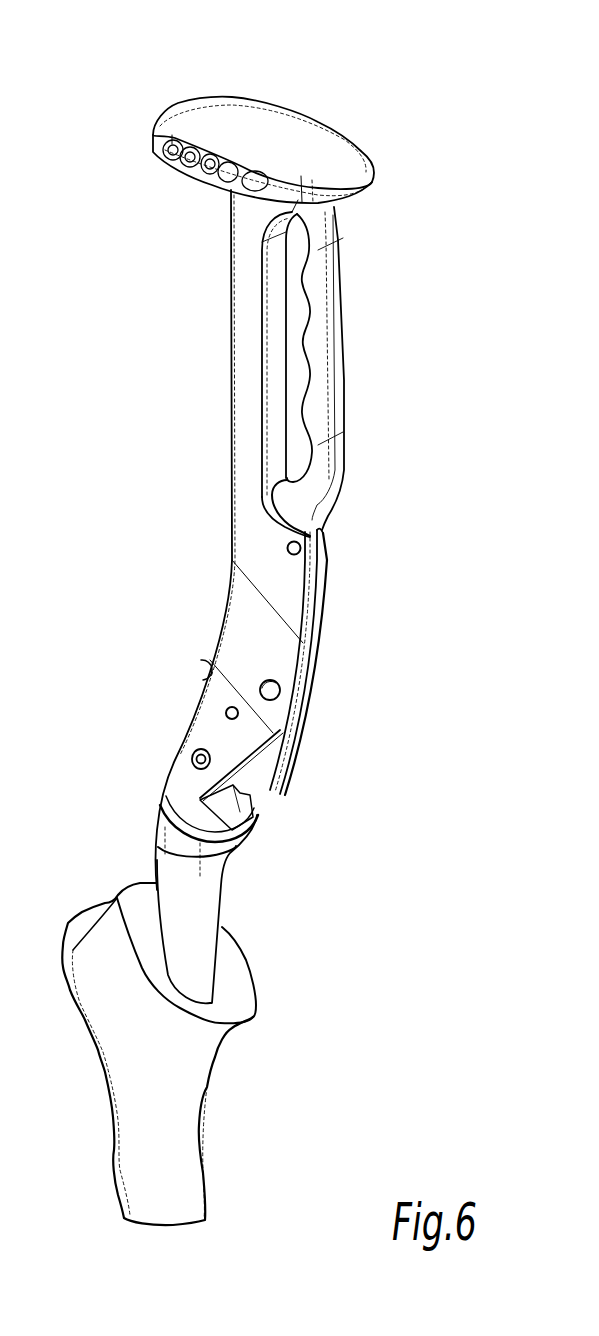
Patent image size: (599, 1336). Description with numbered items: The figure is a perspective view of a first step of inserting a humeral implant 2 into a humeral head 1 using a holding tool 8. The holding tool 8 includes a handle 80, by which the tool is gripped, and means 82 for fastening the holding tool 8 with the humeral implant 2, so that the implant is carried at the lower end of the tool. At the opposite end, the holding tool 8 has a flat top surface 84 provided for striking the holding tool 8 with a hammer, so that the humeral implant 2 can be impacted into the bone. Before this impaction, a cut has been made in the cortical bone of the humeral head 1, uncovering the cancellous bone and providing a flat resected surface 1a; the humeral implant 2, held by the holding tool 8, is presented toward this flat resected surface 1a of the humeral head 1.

The flat top surface 84 is at (296, 130).
The handle 80 is at (298, 313).
The holding tool 8 is at (288, 588).
The means for fastening 82 is at (222, 792).
The humeral implant 2 is at (193, 908).
The flat resected surface 1a is at (228, 1002).
The humeral head 1 is at (172, 1097).